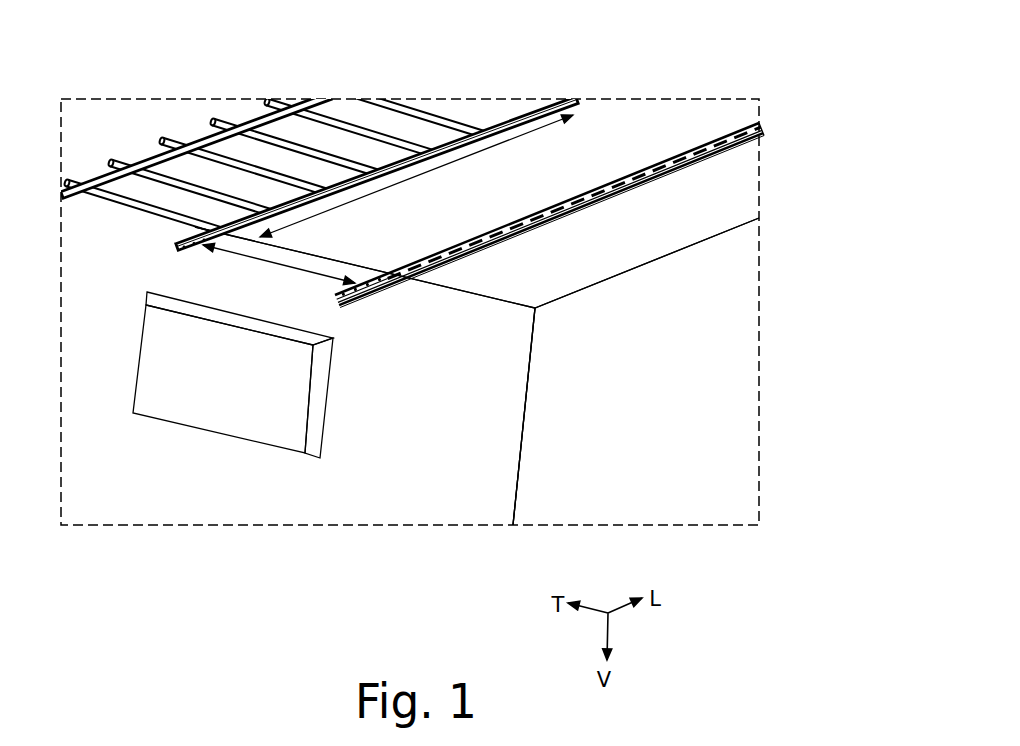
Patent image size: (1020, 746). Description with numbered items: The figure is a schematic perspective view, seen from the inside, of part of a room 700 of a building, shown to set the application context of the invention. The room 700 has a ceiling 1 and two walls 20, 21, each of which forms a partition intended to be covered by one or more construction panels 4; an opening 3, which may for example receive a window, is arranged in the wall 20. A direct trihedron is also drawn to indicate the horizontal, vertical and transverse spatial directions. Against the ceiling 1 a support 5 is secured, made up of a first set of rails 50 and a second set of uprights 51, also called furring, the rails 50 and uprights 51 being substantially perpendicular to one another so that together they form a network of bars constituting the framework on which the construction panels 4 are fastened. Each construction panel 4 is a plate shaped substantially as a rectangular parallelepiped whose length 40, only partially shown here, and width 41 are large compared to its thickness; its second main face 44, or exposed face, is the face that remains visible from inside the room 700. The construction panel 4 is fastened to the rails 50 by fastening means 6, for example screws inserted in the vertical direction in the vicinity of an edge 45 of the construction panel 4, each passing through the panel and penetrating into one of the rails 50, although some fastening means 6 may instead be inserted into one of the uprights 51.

The ceiling 1 is at (319, 129).
The opening 3 is at (260, 422).
The construction panel 4 is at (578, 136).
The support 5 is at (319, 129).
The fastening means 6 is at (672, 175).
The wall 20 is at (373, 408).
The wall 21 is at (673, 425).
The length 40 is at (416, 176).
The width 41 is at (279, 269).
The second main face 44 is at (518, 185).
The edge 45 is at (712, 132).
The rails 50 is at (150, 152).
The uprights 51 is at (375, 122).
The room 700 is at (410, 312).